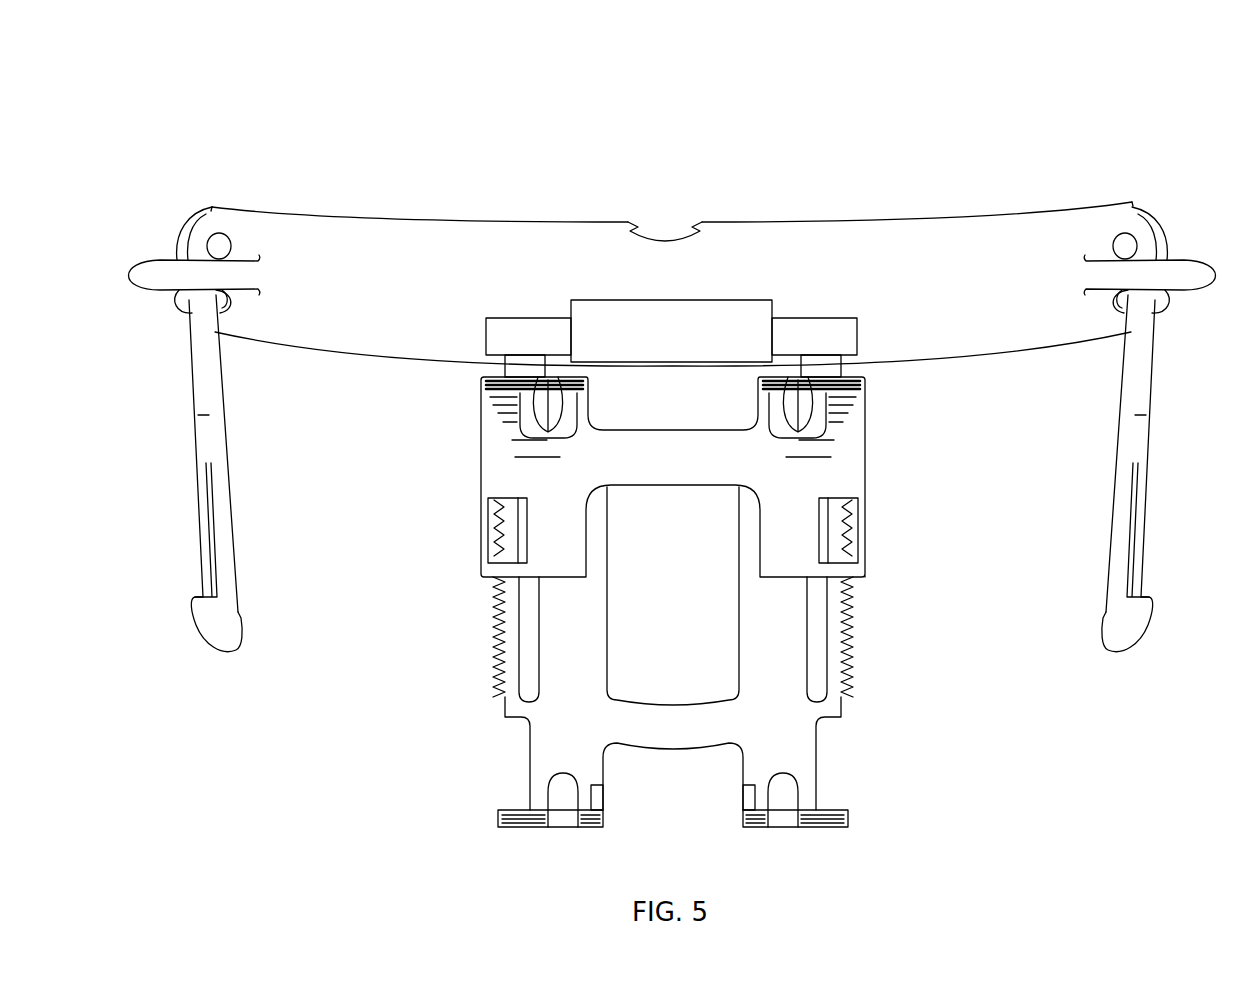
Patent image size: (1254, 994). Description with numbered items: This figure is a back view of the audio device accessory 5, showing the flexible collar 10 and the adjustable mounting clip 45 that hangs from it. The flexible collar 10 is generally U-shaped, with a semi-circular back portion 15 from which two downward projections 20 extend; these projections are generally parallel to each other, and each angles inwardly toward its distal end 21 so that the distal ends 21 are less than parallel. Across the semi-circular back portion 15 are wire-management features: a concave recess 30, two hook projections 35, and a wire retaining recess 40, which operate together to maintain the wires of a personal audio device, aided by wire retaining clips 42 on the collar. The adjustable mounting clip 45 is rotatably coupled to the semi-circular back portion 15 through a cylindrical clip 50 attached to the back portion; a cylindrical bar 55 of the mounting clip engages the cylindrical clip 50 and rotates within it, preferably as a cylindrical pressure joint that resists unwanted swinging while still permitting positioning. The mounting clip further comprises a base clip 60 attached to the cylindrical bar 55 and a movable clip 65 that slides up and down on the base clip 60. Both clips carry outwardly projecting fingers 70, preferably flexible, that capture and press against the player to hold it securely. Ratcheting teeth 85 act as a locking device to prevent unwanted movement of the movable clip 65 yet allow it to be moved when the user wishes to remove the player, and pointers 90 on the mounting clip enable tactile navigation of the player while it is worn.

The audio device accessory 5 is at (1039, 81).
The flexible collar 10 is at (458, 189).
The semi-circular back portion 15 is at (908, 218).
The downward projections 20 is at (191, 472).
The distal ends 21 is at (198, 622).
The concave recess 30 is at (983, 338).
The hook projections 35 is at (162, 260).
The wire retaining recess 40 is at (671, 230).
The wire retaining clips 42 is at (186, 226).
The adjustable mounting clip 45 is at (914, 674).
The cylindrical clip 50 is at (666, 350).
The cylindrical bar 55 is at (897, 311).
The base clip 60 is at (665, 742).
The movable clip 65 is at (655, 471).
The fingers 70 is at (486, 383).
The ratcheting teeth 85 is at (493, 617).
The pointers 90 is at (545, 425).